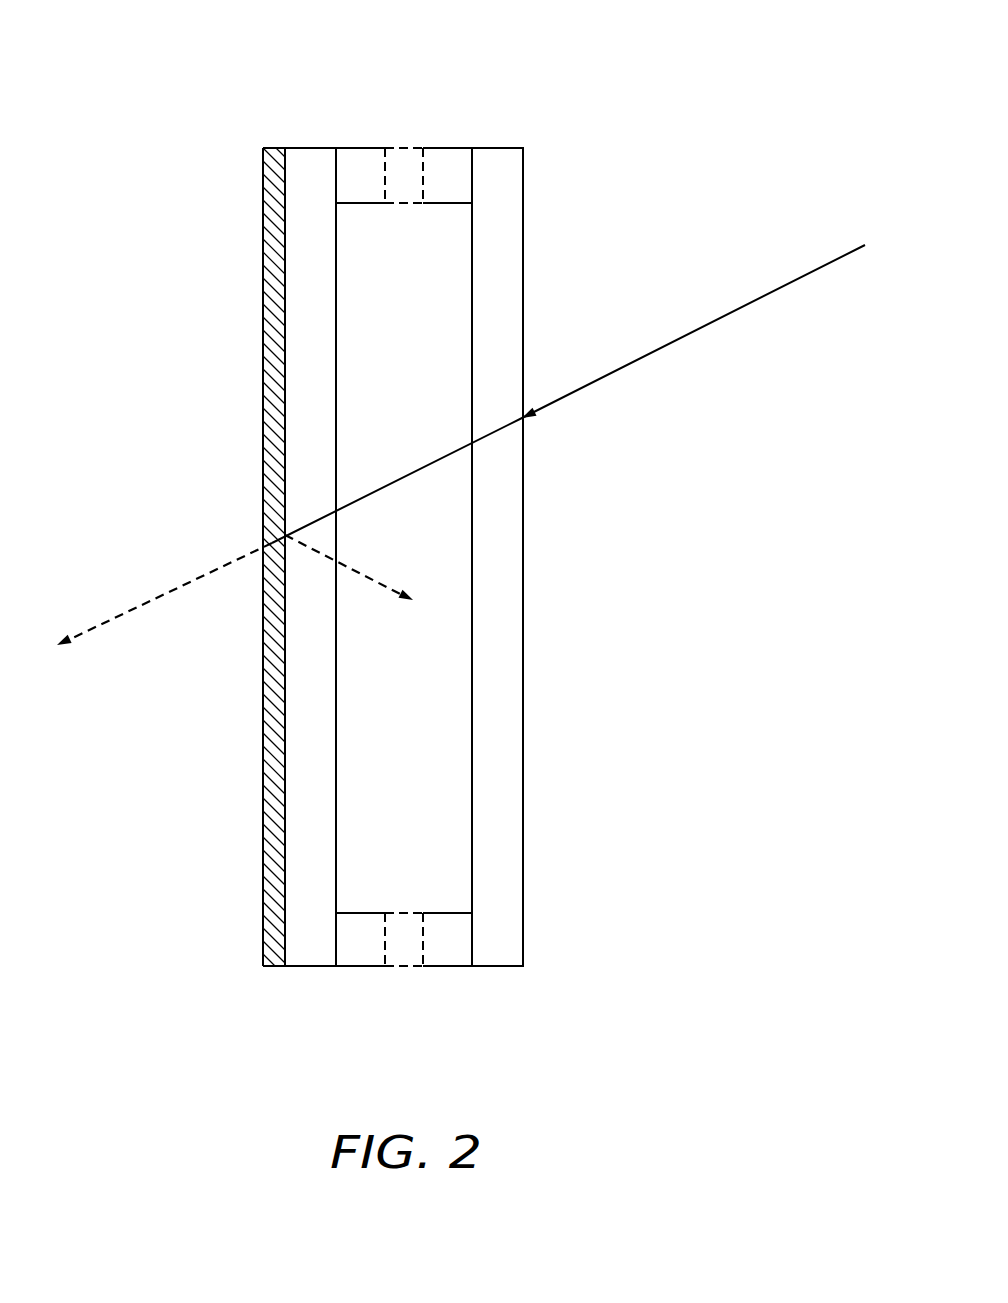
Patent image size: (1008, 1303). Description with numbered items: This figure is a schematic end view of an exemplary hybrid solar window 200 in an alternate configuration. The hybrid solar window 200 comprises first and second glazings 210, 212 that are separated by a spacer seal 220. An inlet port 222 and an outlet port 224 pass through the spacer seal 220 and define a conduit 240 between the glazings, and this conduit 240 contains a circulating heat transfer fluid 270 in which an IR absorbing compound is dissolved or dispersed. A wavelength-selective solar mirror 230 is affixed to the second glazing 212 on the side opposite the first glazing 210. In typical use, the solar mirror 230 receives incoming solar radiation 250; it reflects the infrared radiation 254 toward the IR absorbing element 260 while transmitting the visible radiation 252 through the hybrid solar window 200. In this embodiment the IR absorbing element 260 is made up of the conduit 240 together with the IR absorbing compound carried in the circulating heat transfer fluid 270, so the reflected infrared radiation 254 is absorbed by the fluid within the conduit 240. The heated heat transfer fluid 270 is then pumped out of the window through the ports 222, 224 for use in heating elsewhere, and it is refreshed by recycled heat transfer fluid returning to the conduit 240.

The hybrid solar window 200 is at (523, 105).
The first glazing 210 is at (523, 523).
The second glazing 212 is at (282, 427).
The spacer seal 220 is at (357, 147).
The inlet port 222 is at (402, 967).
The outlet port 224 is at (402, 148).
The wavelength-selective solar mirror 230 is at (265, 878).
The conduit 240 is at (472, 312).
The solar radiation 250 is at (710, 323).
The visible radiation 252 is at (145, 600).
The infrared radiation 254 is at (390, 588).
The IR absorbing element 260 is at (393, 288).
The circulating heat transfer fluid 270 is at (410, 652).